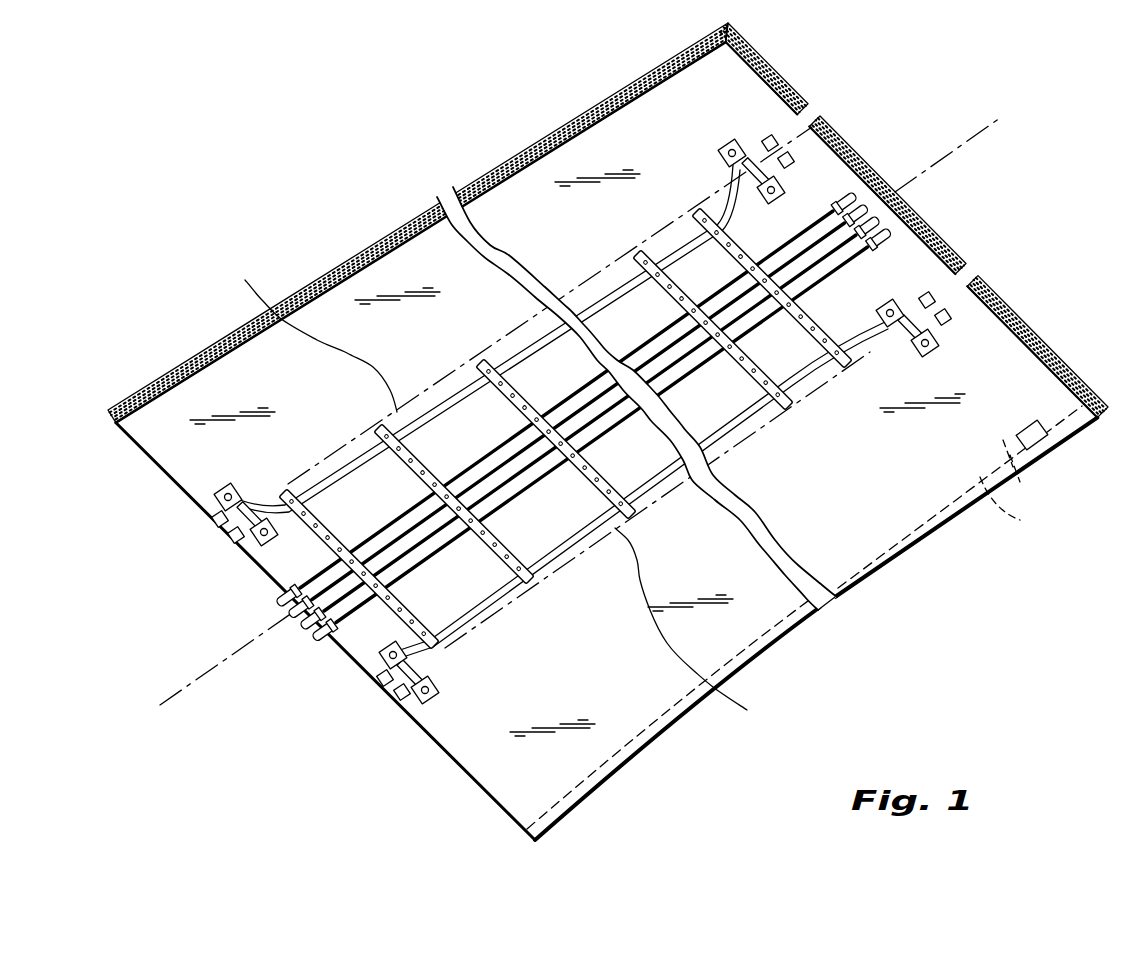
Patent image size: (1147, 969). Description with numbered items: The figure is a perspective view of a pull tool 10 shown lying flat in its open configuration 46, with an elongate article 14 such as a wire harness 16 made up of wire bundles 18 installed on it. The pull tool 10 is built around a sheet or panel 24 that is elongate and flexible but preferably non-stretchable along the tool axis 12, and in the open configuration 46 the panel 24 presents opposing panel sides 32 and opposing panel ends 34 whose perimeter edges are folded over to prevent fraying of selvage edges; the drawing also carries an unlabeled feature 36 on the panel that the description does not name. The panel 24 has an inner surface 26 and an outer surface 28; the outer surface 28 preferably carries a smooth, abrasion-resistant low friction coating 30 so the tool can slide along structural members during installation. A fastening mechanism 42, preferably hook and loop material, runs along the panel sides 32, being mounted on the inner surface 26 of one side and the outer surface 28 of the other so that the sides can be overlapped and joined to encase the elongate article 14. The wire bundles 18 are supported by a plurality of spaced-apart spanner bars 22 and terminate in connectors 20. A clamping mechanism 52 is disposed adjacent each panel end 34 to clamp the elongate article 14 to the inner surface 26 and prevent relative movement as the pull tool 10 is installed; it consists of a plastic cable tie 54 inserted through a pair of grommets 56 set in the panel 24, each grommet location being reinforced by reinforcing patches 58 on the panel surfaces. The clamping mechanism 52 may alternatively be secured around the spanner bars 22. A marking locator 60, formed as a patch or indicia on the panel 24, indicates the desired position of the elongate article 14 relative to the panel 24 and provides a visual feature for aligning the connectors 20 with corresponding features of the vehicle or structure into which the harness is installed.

The pull tool 10 is at (604, 432).
The open configuration 46 is at (262, 198).
The tool axis 12 is at (962, 143).
The elongate article 14 is at (960, 464).
The wire harness 16 is at (877, 340).
The wire bundle 18 is at (730, 430).
The connectors 20 is at (788, 148).
The spanner bars 22 is at (503, 548).
The panel 24 is at (600, 717).
The inner surface 26 is at (931, 457).
The outer surface 28 is at (1022, 483).
The low friction coating 30 is at (1010, 515).
The panel sides 32 is at (618, 92).
The panel ends 34 is at (1063, 358).
The fold 36 is at (496, 493).
The fastening mechanism 42 is at (498, 160).
The clamping mechanism 52 is at (559, 479).
The cable tie 54 is at (258, 542).
The grommets 56 is at (213, 501).
The reinforcing patches 58 is at (220, 500).
The marking locator 60 is at (1047, 453).